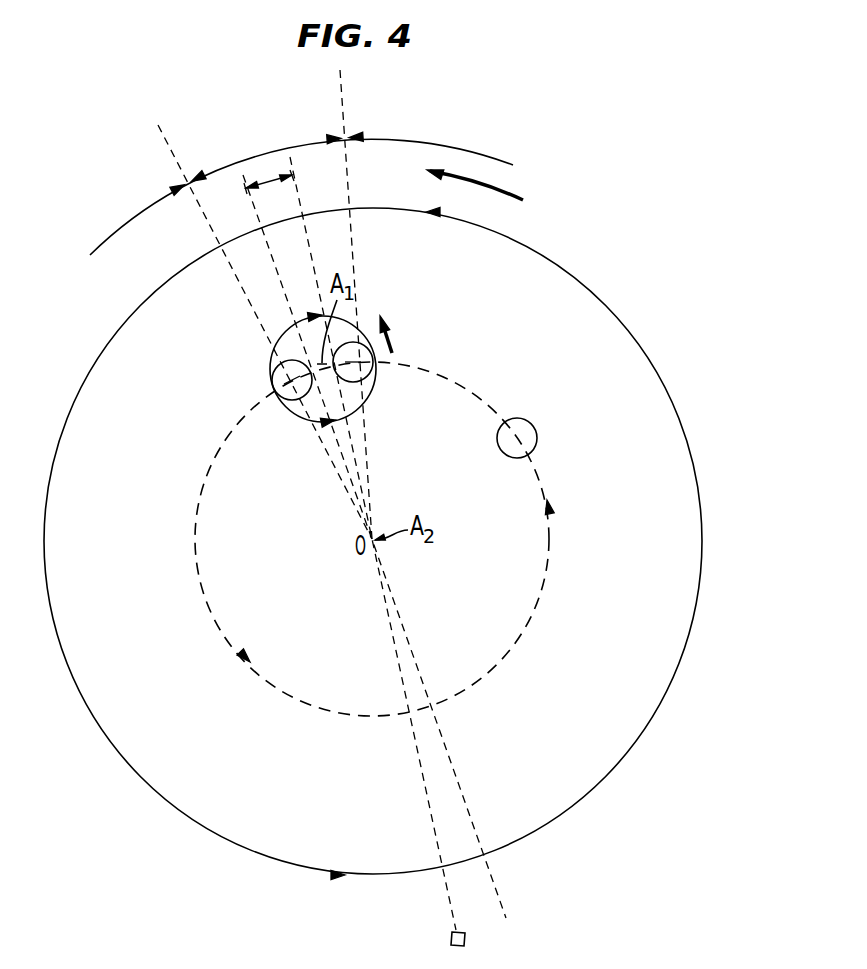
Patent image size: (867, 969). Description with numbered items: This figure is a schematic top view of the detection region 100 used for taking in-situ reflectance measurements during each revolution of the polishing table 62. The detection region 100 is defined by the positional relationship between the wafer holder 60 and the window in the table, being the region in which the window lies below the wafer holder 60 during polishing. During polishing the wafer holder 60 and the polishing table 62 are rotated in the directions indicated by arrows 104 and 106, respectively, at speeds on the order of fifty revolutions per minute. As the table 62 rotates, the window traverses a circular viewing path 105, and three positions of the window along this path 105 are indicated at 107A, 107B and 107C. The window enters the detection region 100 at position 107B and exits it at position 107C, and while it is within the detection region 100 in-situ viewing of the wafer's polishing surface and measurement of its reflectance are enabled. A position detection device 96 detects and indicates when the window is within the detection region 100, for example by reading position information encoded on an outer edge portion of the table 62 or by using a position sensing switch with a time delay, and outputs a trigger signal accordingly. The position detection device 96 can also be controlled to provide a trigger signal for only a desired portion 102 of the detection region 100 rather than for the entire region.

The polishing table 62 is at (605, 300).
The detection region 100 is at (290, 146).
The desired portion of detection region 102 is at (266, 182).
The table rotation direction arrow 106 is at (523, 200).
The viewing path 105 is at (537, 478).
The wafer holder 60 is at (355, 322).
The holder rotation direction arrow 104 is at (392, 337).
The window exit position 107C is at (272, 380).
The window entry position 107B is at (368, 375).
The window position 107A is at (530, 425).
The position detection device 96 is at (452, 940).